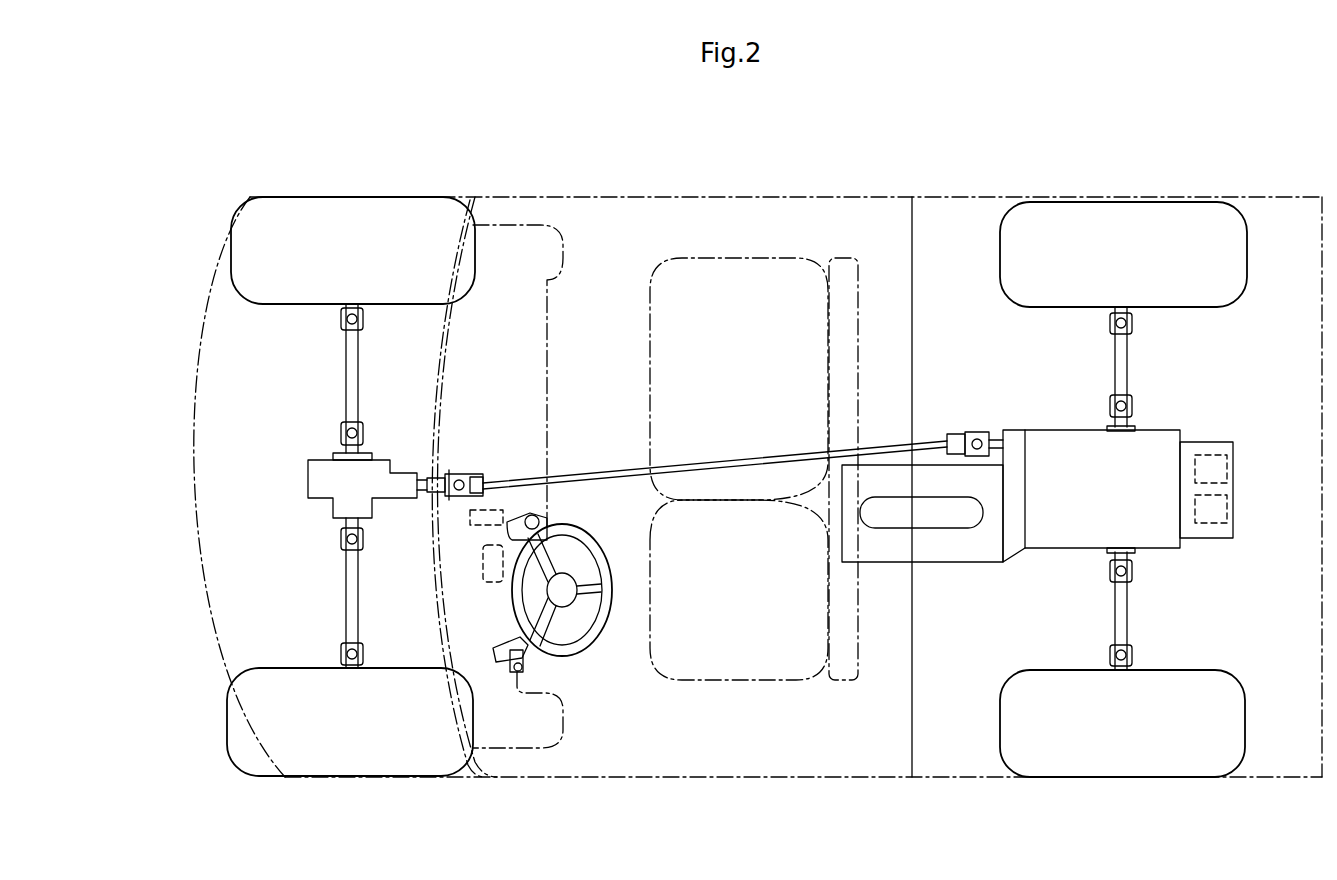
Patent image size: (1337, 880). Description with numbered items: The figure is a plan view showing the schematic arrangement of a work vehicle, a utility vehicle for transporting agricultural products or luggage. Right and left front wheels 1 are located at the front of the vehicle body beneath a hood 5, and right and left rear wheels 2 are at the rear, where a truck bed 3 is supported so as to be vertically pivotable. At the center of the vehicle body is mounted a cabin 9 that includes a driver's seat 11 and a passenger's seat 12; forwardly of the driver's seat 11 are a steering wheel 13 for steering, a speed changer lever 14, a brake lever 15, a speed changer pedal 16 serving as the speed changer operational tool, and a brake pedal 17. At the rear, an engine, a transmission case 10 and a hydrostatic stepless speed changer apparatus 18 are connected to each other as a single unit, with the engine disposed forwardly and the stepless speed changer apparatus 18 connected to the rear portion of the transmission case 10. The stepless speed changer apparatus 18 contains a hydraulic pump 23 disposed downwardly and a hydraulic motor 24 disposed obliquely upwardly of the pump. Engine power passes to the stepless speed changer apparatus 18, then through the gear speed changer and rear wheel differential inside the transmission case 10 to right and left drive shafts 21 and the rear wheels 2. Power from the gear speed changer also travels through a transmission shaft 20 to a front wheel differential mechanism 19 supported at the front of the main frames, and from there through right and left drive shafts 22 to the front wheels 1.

The front wheels 1 is at (355, 205).
The rear wheels 2 is at (1124, 205).
The truck bed 3 is at (1286, 196).
The hood 5 is at (191, 432).
The cabin 9 is at (596, 196).
The transmission case 10 is at (1067, 430).
The driver's seat 11 is at (722, 680).
The passenger's seat 12 is at (648, 383).
The steering wheel 13 is at (600, 632).
The speed changer lever 14 is at (538, 520).
The brake lever 15 is at (524, 660).
The speed changer pedal 16 is at (470, 518).
The brake pedal 17 is at (485, 563).
The hydrostatic stepless speed changer apparatus 18 is at (1212, 430).
The front wheel differential mechanism 19 is at (308, 480).
The transmission shaft 20 is at (712, 463).
The rear drive shafts 21 is at (1128, 420).
The front drive shafts 22 is at (345, 445).
The hydraulic pump 23 is at (1227, 514).
The hydraulic motor 24 is at (1227, 466).